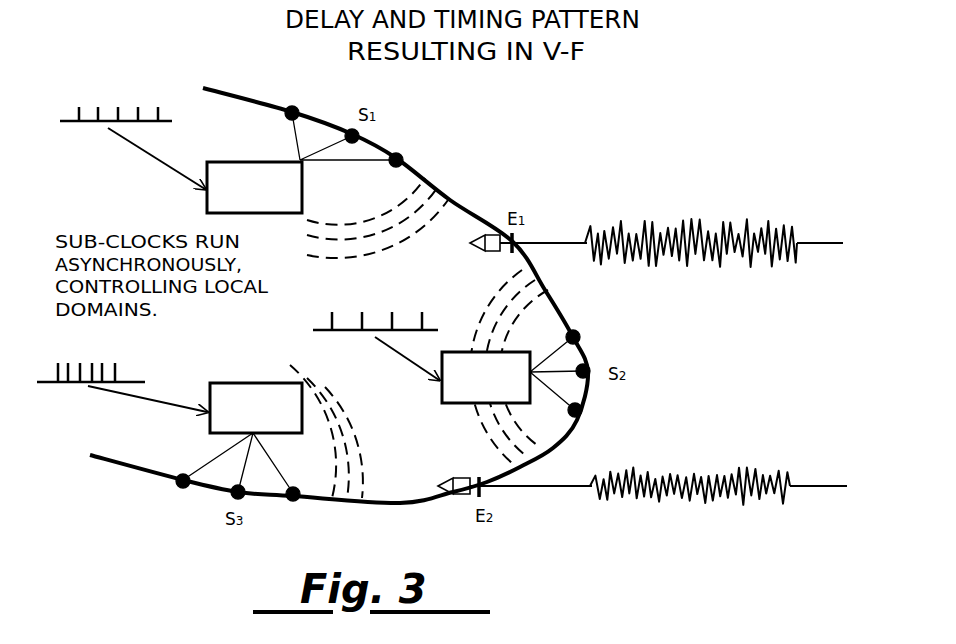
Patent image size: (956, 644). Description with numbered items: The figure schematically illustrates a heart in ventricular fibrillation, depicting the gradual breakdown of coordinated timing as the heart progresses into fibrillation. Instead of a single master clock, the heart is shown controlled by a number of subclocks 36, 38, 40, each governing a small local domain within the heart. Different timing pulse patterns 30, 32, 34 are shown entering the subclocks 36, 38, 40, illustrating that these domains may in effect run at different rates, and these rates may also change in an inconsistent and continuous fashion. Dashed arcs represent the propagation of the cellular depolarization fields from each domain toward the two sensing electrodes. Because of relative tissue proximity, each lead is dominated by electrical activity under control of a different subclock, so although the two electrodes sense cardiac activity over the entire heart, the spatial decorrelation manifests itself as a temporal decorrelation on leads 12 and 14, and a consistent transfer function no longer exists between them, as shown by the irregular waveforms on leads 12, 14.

The catheter 12 is at (813, 242).
The catheter 14 is at (818, 485).
The timing pulse pattern 30 is at (112, 108).
The timing pulse pattern 32 is at (88, 363).
The timing pulse pattern 34 is at (370, 318).
The subclock 36 is at (266, 162).
The subclock 38 is at (210, 431).
The subclock 40 is at (447, 404).